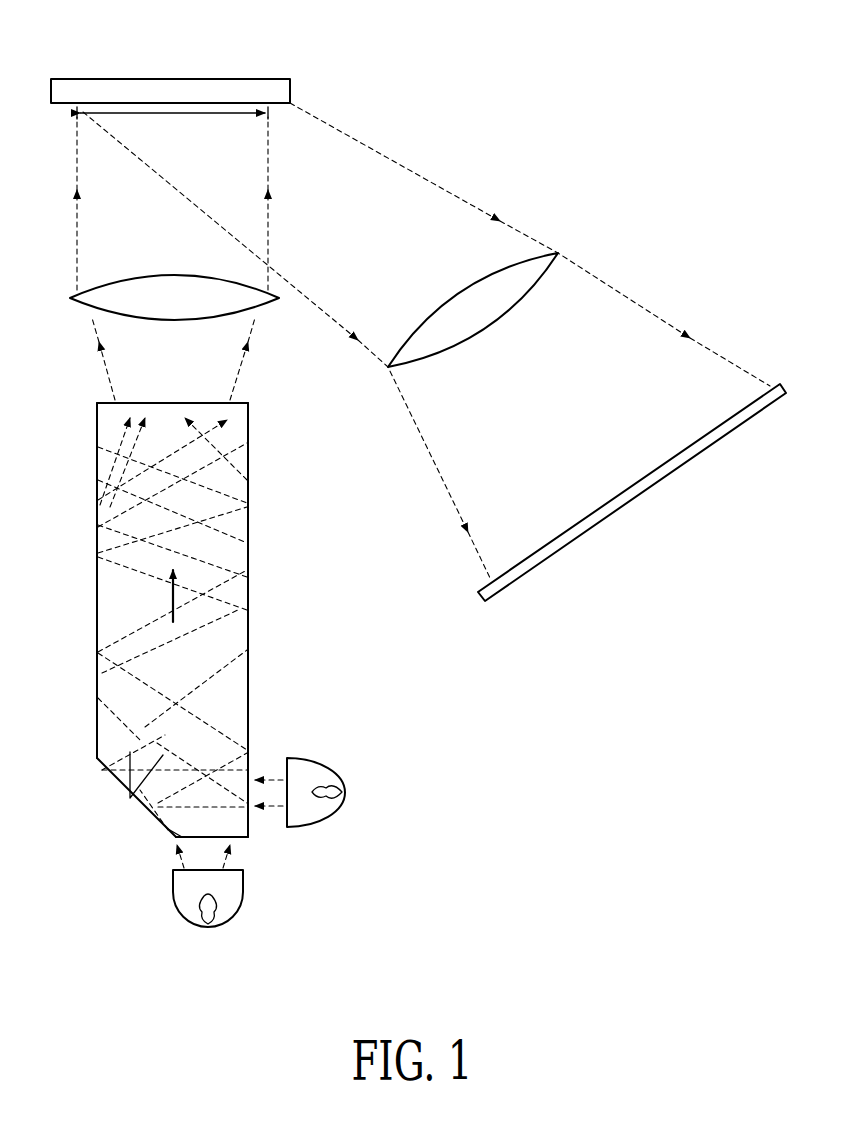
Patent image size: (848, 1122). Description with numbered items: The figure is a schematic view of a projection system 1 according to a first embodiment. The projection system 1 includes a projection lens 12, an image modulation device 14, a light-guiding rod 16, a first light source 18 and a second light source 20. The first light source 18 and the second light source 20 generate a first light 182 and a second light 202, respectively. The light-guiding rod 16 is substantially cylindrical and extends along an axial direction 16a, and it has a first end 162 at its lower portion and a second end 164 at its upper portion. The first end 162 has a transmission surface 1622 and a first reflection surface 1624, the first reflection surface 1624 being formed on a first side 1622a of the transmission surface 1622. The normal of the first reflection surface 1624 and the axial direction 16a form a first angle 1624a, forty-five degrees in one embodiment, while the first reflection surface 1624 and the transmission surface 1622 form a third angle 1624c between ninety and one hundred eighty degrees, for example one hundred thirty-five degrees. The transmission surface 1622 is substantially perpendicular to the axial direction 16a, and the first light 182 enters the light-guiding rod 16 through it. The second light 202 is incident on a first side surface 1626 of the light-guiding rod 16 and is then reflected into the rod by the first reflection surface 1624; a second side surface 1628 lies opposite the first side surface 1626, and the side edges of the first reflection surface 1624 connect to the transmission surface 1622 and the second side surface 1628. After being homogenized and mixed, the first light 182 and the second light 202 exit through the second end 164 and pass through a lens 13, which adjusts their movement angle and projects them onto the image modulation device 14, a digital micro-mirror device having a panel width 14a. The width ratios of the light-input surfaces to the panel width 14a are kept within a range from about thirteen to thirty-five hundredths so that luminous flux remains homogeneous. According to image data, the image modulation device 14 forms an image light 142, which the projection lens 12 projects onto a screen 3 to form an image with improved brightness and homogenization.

The projection system 1 is at (623, 74).
The screen 3 is at (609, 507).
The projection lens 12 is at (536, 256).
The lens 13 is at (262, 304).
The image modulation device 14 is at (172, 86).
The panel width 14a is at (172, 124).
The image light 142 is at (407, 170).
The light-guiding rod 16 is at (188, 662).
The axial direction 16a is at (170, 605).
The first end 162 is at (190, 824).
The second end 164 is at (168, 431).
The transmission surface 1622 is at (226, 842).
The first side 1622a is at (182, 842).
The first reflection surface 1624 is at (113, 784).
The first angle 1624a is at (156, 768).
The third angle 1624c is at (169, 841).
The first side surface 1626 is at (254, 829).
The second side surface 1628 is at (92, 716).
The first light source 18 is at (223, 914).
The first light 182 is at (240, 869).
The second light source 20 is at (322, 770).
The second light 202 is at (267, 758).